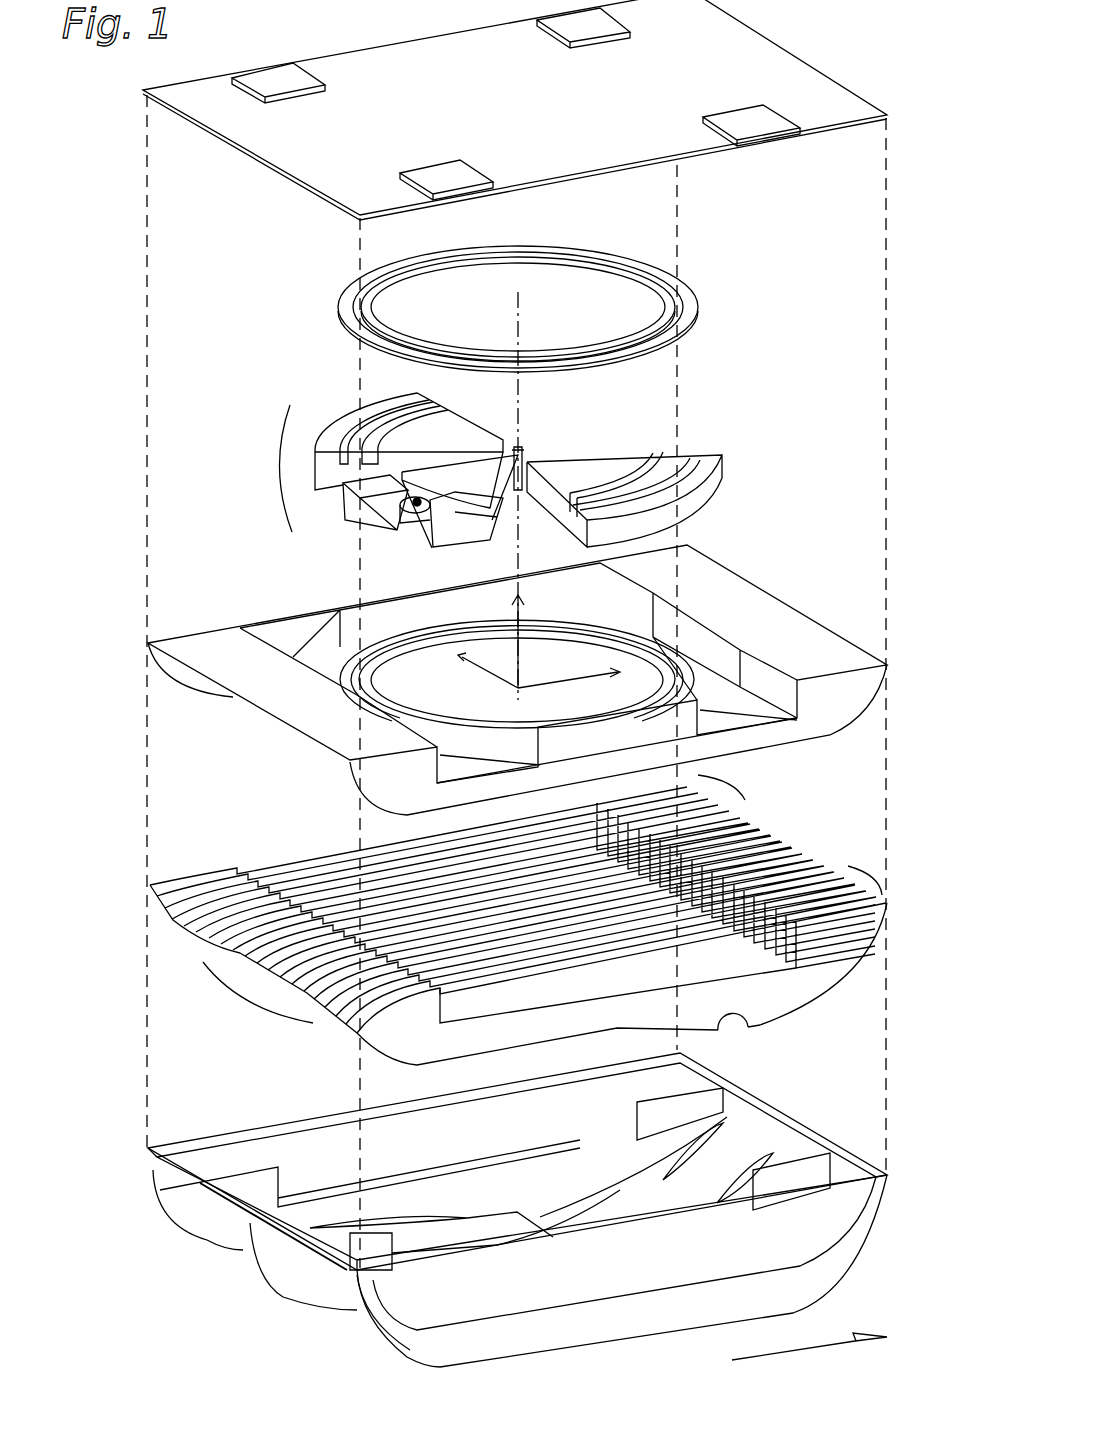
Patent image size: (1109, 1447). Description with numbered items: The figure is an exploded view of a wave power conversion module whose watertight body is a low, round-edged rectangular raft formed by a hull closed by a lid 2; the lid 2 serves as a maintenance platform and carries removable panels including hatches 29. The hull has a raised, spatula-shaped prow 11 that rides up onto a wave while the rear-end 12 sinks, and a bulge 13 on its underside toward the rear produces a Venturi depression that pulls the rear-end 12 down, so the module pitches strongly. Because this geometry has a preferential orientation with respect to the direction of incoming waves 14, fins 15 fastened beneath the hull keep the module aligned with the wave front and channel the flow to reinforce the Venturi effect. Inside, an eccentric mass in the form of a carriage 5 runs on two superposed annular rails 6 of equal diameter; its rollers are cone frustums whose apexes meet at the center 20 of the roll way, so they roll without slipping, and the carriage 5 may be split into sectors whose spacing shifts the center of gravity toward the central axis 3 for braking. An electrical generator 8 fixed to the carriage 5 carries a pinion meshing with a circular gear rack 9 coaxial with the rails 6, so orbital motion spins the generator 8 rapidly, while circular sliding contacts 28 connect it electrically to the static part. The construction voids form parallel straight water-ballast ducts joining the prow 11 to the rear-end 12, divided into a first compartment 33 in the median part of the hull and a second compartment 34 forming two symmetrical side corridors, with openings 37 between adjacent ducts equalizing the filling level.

The lid 2 is at (255, 176).
The hatches 29 is at (645, 14).
The rails 6 is at (388, 272).
The gear rack 9 is at (700, 277).
The center 20 is at (524, 298).
The central axis 3 is at (532, 414).
The carriage 5 is at (258, 462).
The circular sliding contacts 28 is at (528, 453).
The electrical generator 8 is at (405, 532).
The first compartment 33 is at (235, 1007).
The second compartment 34 is at (738, 782).
The openings 37 is at (738, 1034).
The rear-end of the hull 12 is at (838, 1126).
The bulge 13 is at (572, 1198).
The prow 11 is at (250, 1245).
The fins 15 is at (378, 1345).
The direction of incoming waves 14 is at (809, 1340).